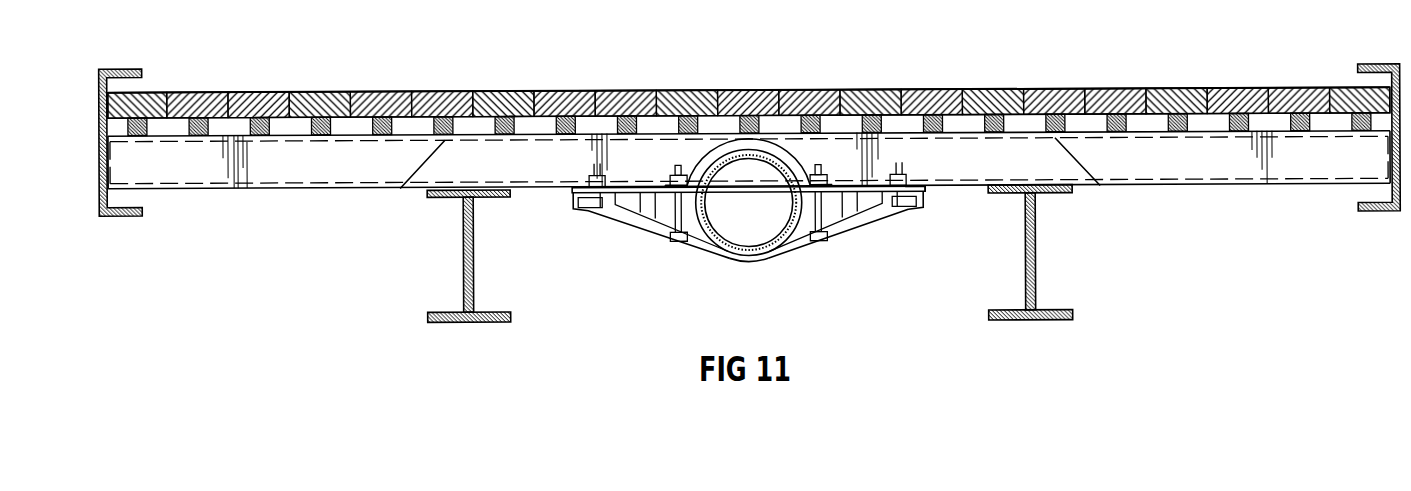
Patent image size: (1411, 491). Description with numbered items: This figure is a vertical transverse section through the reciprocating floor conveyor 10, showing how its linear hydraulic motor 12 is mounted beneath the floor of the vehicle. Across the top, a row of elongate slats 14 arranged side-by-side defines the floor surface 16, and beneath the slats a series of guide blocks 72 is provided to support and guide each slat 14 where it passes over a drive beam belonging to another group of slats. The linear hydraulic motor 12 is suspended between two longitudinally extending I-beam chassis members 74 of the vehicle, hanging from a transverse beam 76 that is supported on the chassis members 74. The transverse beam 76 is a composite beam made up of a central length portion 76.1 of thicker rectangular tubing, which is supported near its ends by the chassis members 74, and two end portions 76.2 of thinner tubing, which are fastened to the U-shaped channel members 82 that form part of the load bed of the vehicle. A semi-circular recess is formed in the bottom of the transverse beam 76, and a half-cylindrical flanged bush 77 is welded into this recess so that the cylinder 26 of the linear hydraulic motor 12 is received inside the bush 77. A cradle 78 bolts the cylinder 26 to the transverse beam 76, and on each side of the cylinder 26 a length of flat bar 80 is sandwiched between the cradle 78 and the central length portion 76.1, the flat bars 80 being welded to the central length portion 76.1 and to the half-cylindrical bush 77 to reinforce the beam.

The reciprocating floor conveyor 10 is at (501, 67).
The linear hydraulic motor 12 is at (796, 254).
The slats 14 is at (322, 90).
The floor surface 16 is at (759, 87).
The cylinder 26 is at (760, 255).
The guide block 72 is at (262, 133).
The I-beam chassis members 74 is at (462, 253).
The transverse beam 76 is at (995, 158).
The central length portion 76.1 is at (895, 152).
The end portions 76.2 is at (307, 161).
The half-cylindrical flanged bush 77 is at (716, 146).
The cradle 78 is at (703, 238).
The flat bar 80 is at (925, 193).
The U-shaped channel members 82 is at (131, 67).